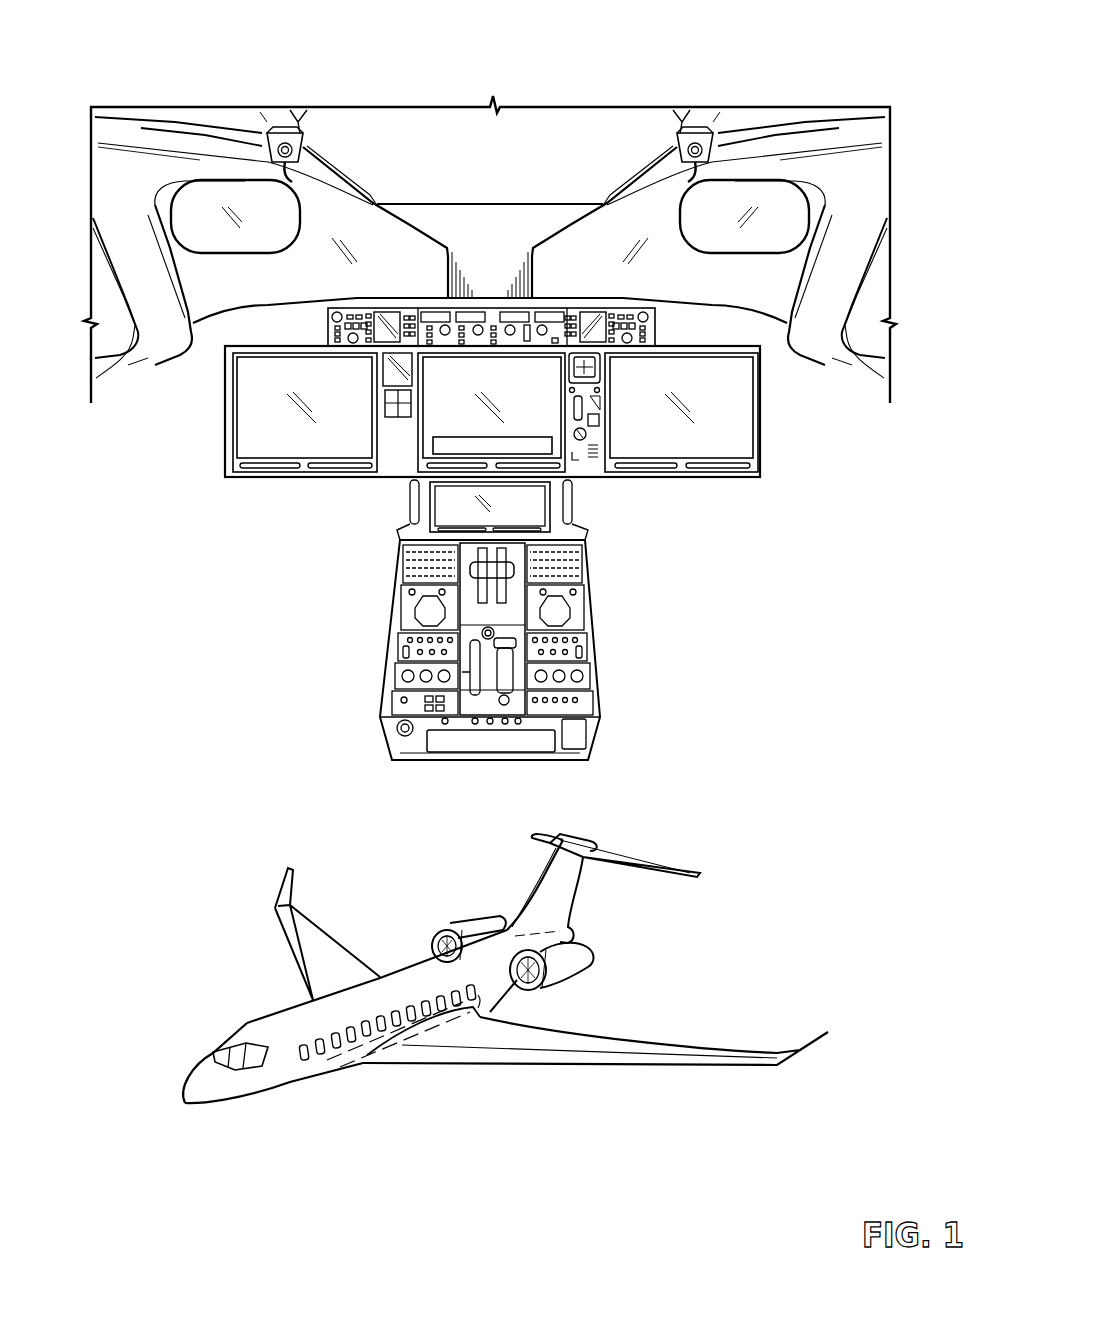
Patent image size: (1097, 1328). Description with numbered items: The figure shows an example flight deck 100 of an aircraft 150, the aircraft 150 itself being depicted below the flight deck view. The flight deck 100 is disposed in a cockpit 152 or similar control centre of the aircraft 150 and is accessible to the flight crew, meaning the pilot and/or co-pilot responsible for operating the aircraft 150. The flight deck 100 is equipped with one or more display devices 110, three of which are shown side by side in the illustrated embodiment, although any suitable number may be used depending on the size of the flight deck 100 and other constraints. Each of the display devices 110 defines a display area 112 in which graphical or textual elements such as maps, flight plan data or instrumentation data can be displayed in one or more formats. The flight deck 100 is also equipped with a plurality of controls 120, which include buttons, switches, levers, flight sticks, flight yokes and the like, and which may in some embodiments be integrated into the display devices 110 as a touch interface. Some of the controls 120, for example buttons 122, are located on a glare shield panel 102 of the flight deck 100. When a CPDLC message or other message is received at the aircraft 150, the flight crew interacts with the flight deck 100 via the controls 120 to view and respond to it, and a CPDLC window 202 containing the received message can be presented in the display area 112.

The flight deck 100 is at (826, 46).
The glare shield panel 102 is at (602, 300).
The display devices 110 is at (767, 346).
The display area 112 is at (388, 430).
The controls 120 is at (380, 277).
The buttons 122 is at (348, 308).
The CPDLC window 202 is at (433, 443).
The aircraft 150 is at (515, 1128).
The cockpit 152 is at (270, 1105).